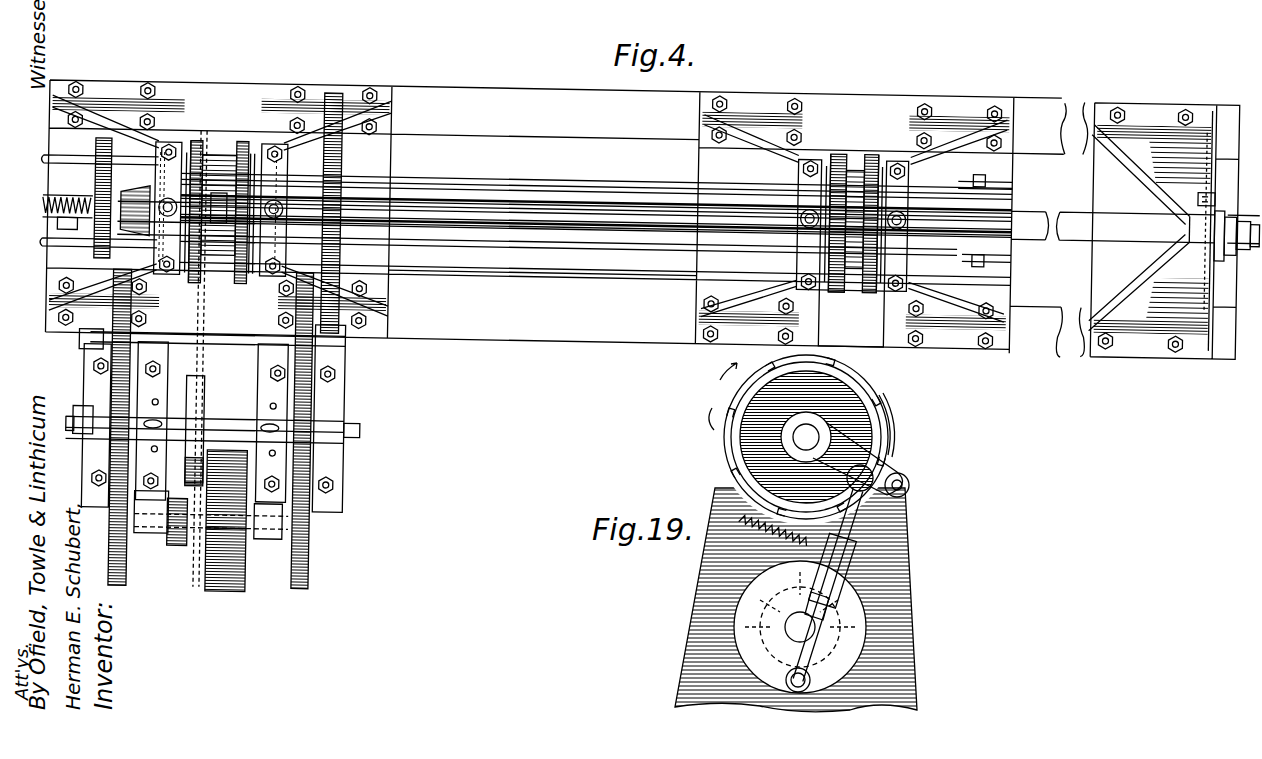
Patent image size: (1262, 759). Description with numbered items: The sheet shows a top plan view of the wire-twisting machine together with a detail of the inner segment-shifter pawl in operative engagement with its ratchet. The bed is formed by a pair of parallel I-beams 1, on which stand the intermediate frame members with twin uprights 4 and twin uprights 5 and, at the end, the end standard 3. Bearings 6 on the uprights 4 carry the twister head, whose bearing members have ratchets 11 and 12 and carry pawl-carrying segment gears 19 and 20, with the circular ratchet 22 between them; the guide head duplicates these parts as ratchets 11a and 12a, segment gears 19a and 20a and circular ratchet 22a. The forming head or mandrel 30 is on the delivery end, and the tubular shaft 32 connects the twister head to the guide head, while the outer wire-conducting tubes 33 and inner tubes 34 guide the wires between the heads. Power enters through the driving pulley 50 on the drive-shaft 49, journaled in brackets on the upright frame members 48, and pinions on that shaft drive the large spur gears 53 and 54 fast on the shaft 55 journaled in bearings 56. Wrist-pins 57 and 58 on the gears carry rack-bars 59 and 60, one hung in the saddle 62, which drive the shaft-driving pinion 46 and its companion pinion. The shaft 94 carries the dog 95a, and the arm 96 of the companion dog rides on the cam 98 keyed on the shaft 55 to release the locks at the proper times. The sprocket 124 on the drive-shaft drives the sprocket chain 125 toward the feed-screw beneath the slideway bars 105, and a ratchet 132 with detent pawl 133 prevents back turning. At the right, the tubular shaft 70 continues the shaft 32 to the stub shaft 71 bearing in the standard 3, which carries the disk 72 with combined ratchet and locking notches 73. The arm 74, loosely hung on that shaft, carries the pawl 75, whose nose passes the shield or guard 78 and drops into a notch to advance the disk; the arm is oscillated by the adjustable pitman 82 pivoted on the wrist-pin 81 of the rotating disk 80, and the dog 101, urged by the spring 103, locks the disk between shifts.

In FIG. 4, the bed beam 1 is at (527, 100).
In FIG. 4, the end standard 3 is at (1210, 287).
In FIG. 19, the end standard 3 is at (905, 574).
In FIG. 4, the twin uprights 4 is at (170, 150).
In FIG. 4, the twin uprights 5 is at (773, 130).
In FIG. 4, the bearing 6 is at (277, 177).
In FIG. 4, the ratchet 11 is at (190, 150).
In FIG. 4, the ratchet 12 is at (257, 150).
In FIG. 4, the segment gear 19 is at (200, 150).
In FIG. 4, the segment gear 20 is at (248, 150).
In FIG. 4, the circular ratchet 22 is at (218, 167).
In FIG. 4, the ratchet disk 11a is at (837, 153).
In FIG. 4, the ratchet 12a is at (883, 147).
In FIG. 4, the segment gear 19a is at (843, 153).
In FIG. 4, the segment gear 20a is at (872, 153).
In FIG. 4, the circular ratchet 22a is at (853, 180).
In FIG. 4, the forming head or mandrel 30 is at (140, 185).
In FIG. 4, the tubular shaft 32 is at (597, 207).
In FIG. 4, the wire-conducting tubes 33 is at (493, 184).
In FIG. 4, the wire-conducting tubes 34 is at (540, 188).
In FIG. 4, the shaft-driving pinion 46 is at (100, 184).
In FIG. 4, the upright frame member 48 is at (277, 467).
In FIG. 4, the drive-shaft 49 is at (250, 533).
In FIG. 4, the driving pulley 50 is at (247, 583).
In FIG. 4, the spur gear 53 is at (127, 580).
In FIG. 4, the spur gear 54 is at (310, 550).
In FIG. 4, the shaft 55 is at (263, 420).
In FIG. 4, the bearing 56 is at (163, 413).
In FIG. 4, the wrist-pin 57 is at (82, 407).
In FIG. 4, the wrist-pin 58 is at (353, 430).
In FIG. 4, the rack-bar 59 is at (107, 338).
In FIG. 4, the rack-bar 60 is at (330, 333).
In FIG. 4, the saddle 62 is at (387, 163).
In FIG. 4, the tubular shaft 70 is at (1042, 217).
In FIG. 19, the stub shaft 71 is at (790, 441).
In FIG. 4, the disk 72 is at (1175, 237).
In FIG. 19, the disk 72 is at (853, 376).
In FIG. 19, the combined ratchet and locking notches 73 is at (713, 396).
In FIG. 19, the arm 74 is at (900, 456).
In FIG. 19, the pawl 75 is at (888, 507).
In FIG. 4, the shield or guard 78 is at (1187, 210).
In FIG. 19, the shield or guard 78 is at (896, 431).
In FIG. 19, the disk 80 is at (857, 643).
In FIG. 19, the wrist-pin 81 is at (780, 673).
In FIG. 19, the adjustable pitman 82 is at (888, 575).
In FIG. 4, the shaft 94 is at (537, 270).
In FIG. 4, the dog 95a is at (851, 318).
In FIG. 4, the arm 96 is at (182, 352).
In FIG. 4, the cam 98 is at (205, 455).
In FIG. 19, the dog 101 is at (895, 535).
In FIG. 19, the spring 103 is at (750, 532).
In FIG. 4, the slideway bars 105 is at (72, 160).
In FIG. 4, the sprocket 124 is at (197, 540).
In FIG. 4, the sprocket chain 125 is at (207, 303).
In FIG. 4, the ratchet 132 is at (177, 535).
In FIG. 4, the detent pawl 133 is at (147, 520).